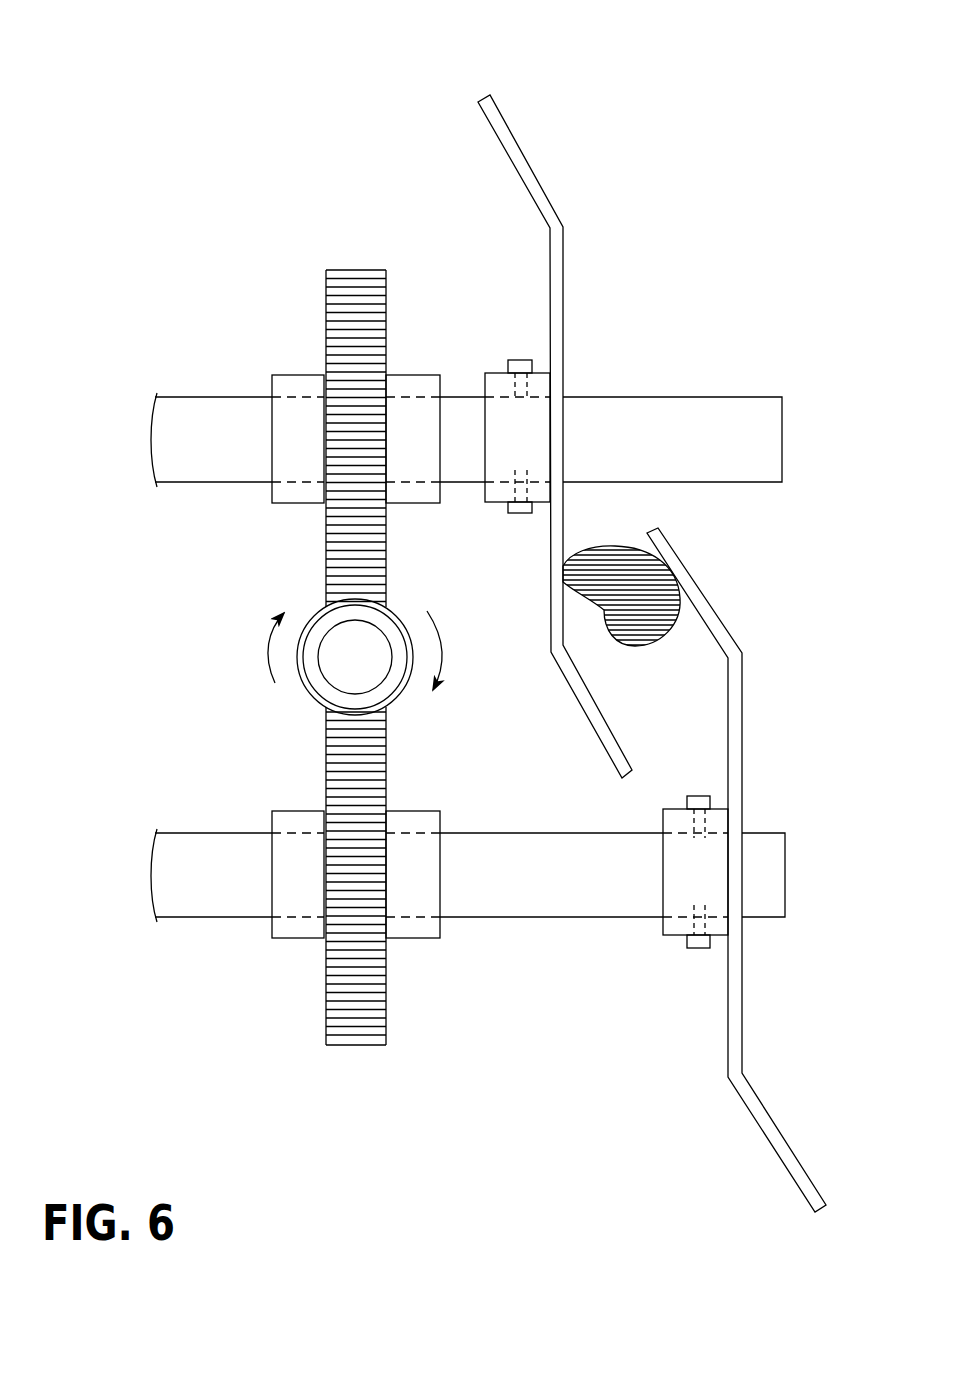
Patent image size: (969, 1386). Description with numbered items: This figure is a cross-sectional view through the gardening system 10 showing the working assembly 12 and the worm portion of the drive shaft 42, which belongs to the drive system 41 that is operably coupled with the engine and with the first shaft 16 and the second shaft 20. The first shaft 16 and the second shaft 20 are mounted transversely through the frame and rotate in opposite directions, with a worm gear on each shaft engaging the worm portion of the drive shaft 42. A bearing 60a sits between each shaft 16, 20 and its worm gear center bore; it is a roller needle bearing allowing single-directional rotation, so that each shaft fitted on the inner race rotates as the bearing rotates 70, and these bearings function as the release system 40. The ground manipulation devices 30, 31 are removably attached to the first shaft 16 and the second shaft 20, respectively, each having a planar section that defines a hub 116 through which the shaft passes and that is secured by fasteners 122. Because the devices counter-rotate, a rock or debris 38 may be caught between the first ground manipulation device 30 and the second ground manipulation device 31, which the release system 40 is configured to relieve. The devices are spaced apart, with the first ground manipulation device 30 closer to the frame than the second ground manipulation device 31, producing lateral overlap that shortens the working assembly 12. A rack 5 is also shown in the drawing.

The gardening system 10 is at (234, 241).
The working assembly 12 is at (777, 327).
The first shaft 16 is at (218, 418).
The second shaft 20 is at (765, 881).
The first ground manipulation device 30 is at (545, 190).
The second ground manipulation device 31 is at (743, 720).
The debris 38 is at (628, 635).
The release system 40 is at (300, 372).
The drive system 41 is at (314, 708).
The drive shaft 42 is at (335, 668).
The rack 5 is at (327, 547).
The bearing 60a is at (288, 487).
The rotation of bearing 70 is at (358, 650).
The hub 116 is at (503, 480).
The fasteners 122 is at (518, 367).